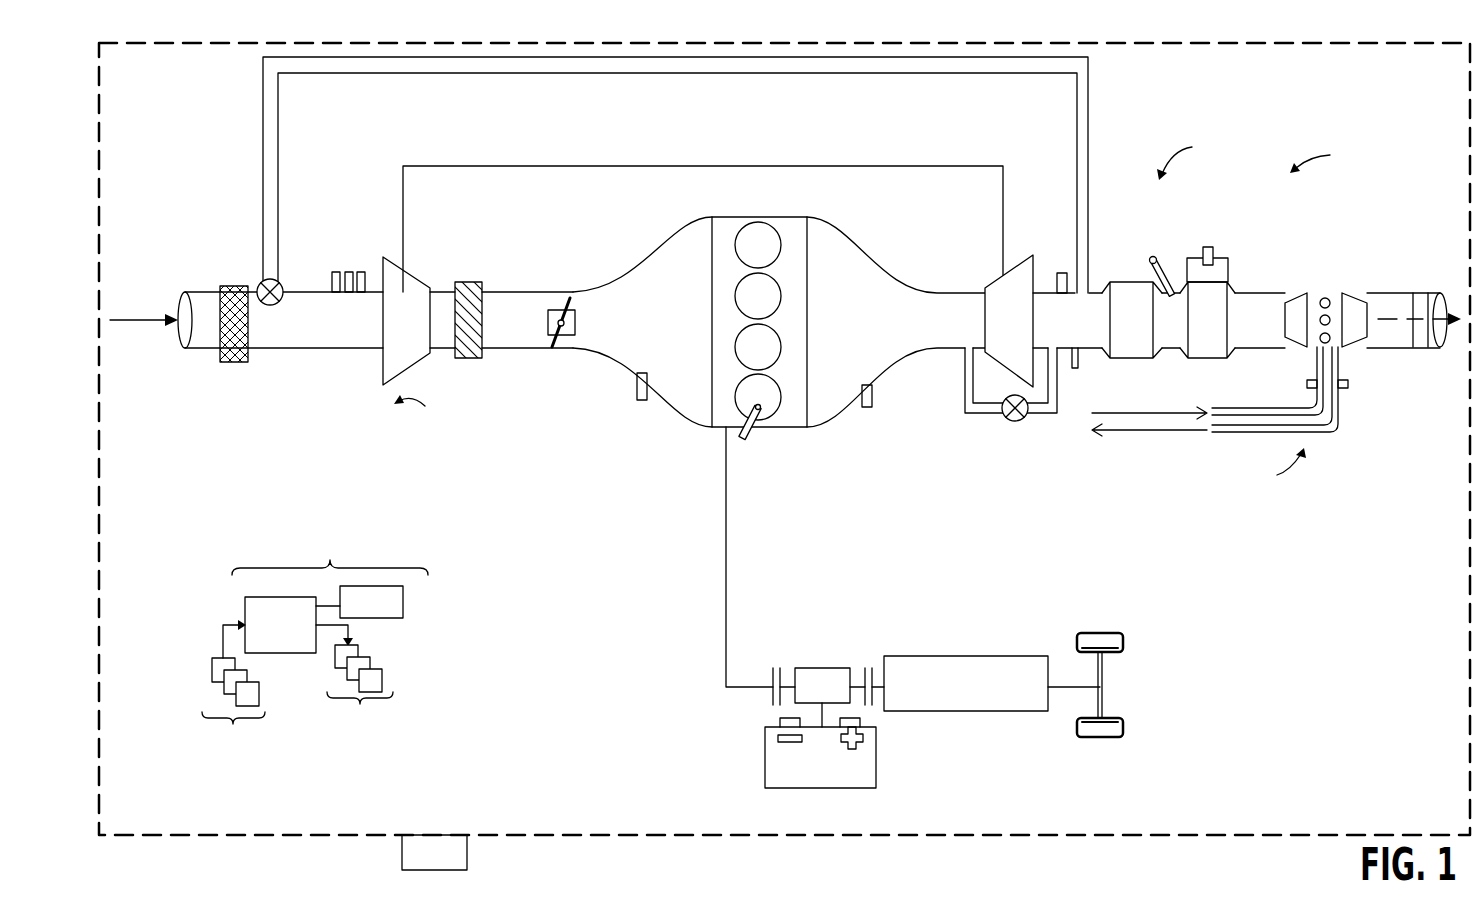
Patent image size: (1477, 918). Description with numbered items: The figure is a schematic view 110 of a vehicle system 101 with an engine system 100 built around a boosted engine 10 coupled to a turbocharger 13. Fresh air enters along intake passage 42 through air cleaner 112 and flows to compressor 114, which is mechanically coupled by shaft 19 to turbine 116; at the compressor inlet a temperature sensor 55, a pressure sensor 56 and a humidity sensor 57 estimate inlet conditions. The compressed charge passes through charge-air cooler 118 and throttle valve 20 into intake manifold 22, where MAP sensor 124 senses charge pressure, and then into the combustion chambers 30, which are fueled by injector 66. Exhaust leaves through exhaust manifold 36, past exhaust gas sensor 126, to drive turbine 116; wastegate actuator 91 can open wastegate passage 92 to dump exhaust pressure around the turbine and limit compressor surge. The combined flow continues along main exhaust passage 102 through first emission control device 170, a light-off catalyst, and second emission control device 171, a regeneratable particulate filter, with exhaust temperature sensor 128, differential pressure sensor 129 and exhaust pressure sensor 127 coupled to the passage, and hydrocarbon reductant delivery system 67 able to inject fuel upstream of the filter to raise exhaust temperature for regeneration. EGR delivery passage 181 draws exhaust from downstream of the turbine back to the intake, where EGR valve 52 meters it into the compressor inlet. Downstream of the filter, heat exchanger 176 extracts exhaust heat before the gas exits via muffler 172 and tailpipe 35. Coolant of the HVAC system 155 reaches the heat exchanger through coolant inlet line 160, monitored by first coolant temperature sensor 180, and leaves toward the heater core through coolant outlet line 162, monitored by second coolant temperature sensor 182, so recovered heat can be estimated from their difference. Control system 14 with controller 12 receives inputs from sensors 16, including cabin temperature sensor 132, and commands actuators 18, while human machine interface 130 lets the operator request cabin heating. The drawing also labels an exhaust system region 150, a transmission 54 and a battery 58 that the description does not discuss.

The schematic view 110 is at (1389, 32).
The EGR delivery passage 181 is at (457, 73).
The shaft 19 is at (697, 166).
The intake passage 42 is at (207, 350).
The air cleaner 112 is at (237, 285).
The EGR valve 52 is at (262, 281).
The temperature sensor 55 is at (336, 272).
The pressure sensor 56 is at (349, 272).
The humidity sensor 57 is at (361, 272).
The compressor 114 is at (419, 321).
The turbocharger 13 is at (421, 403).
The charge-air cooler 118 is at (467, 282).
The throttle valve 20 is at (577, 334).
The intake manifold 22 is at (677, 334).
The engine 10 is at (773, 322).
The combustion chambers 30 is at (779, 236).
The injector 66 is at (752, 433).
The manifold air pressure sensor 124 is at (637, 396).
The exhaust gas sensor 126 is at (872, 392).
The exhaust manifold 36 is at (886, 334).
The turbine 116 is at (1009, 321).
The wastegate passage 92 is at (965, 418).
The wastegate actuator 91 is at (1004, 420).
The main exhaust passage 102 is at (1095, 350).
The differential pressure sensor 129 is at (1062, 273).
The exhaust temperature sensor 128 is at (1075, 368).
The first emission control device 170 is at (1147, 329).
The second emission control device 171 is at (1224, 329).
The exhaust pressure sensor 127 is at (1207, 247).
The hydrocarbon reductant delivery system 67 is at (1152, 257).
The heat exchanger 176 is at (1314, 284).
The muffler 172 is at (1422, 288).
The tailpipe 35 is at (1434, 350).
The coolant inlet line 160 is at (1233, 407).
The coolant outlet line 162 is at (1253, 434).
The first coolant temperature sensor 180 is at (1311, 388).
The second coolant temperature sensor 182 is at (1346, 388).
The HVAC system 155 is at (1276, 466).
The exhaust system 150 is at (1193, 158).
The engine system 100 is at (1329, 158).
The control system 14 is at (315, 629).
The controller 12 is at (280, 625).
The human machine interface 130 is at (388, 612).
The sensors 16 is at (238, 694).
The actuators 18 is at (360, 697).
The transmission 54 is at (1022, 712).
The battery 58 is at (876, 757).
The temperature sensor 132 is at (450, 864).
The vehicle system 101 is at (929, 842).